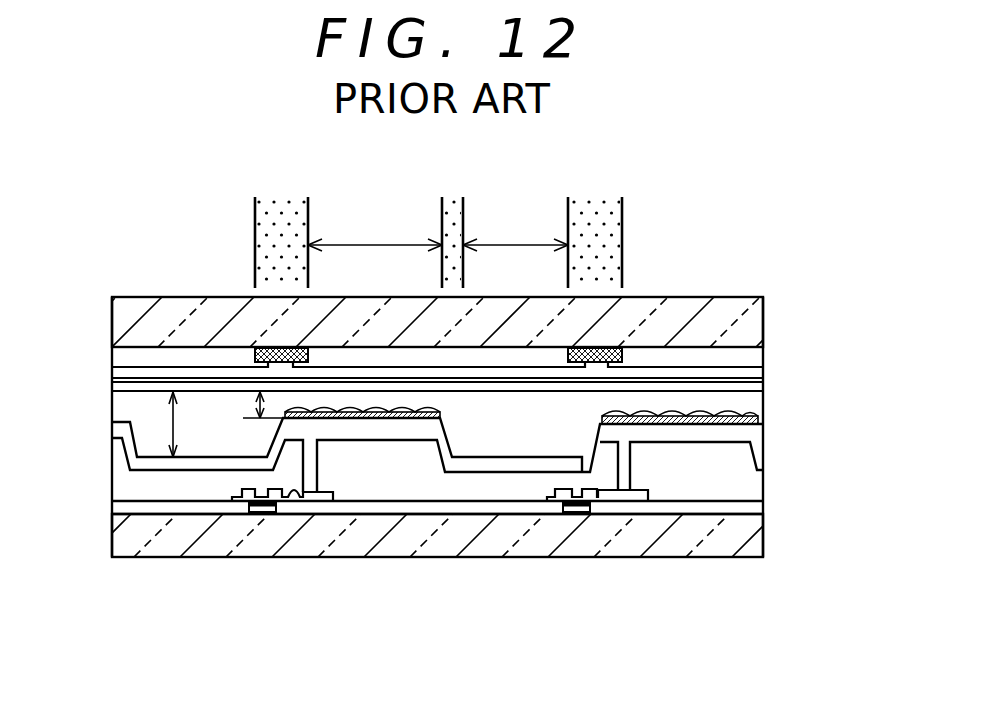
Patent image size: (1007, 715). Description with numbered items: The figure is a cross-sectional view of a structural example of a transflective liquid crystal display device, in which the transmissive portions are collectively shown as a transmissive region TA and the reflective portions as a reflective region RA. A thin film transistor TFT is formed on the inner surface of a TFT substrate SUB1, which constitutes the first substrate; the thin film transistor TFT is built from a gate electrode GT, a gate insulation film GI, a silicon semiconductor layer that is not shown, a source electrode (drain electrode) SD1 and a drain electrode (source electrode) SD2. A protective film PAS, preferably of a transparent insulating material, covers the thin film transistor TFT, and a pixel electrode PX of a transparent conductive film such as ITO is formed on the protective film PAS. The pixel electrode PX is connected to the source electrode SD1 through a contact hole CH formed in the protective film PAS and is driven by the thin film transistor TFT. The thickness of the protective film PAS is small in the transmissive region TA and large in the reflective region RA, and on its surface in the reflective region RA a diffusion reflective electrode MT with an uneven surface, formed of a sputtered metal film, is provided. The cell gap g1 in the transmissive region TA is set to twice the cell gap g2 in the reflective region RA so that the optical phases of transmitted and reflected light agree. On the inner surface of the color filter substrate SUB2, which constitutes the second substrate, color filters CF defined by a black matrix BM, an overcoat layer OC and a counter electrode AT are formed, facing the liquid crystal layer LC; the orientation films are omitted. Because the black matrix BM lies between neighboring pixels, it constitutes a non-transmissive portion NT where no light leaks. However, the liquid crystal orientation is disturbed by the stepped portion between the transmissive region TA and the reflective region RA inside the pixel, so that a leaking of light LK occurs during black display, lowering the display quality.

The color filter substrate SUB2 is at (750, 318).
The color filter CF is at (752, 357).
The black matrix BM is at (610, 347).
The overcoat layer OC is at (752, 375).
The counter electrode AT is at (117, 383).
The liquid crystal layer LC is at (750, 402).
The protective film PAS is at (745, 485).
The diffusion reflective electrode MT is at (440, 418).
The contact hole CH is at (313, 457).
The pixel electrode PX is at (525, 465).
The source electrode (drain electrode) SD1 is at (300, 497).
The drain electrode (source electrode) SD2 is at (238, 491).
The gate electrode GT is at (262, 512).
The gate insulation film GI is at (752, 508).
The TFT substrate SUB1 is at (753, 540).
The thin film transistor TFT is at (642, 567).
The non-transmissive portion NT is at (438, 221).
The leaking of light LK is at (458, 218).
The reflective region RA is at (375, 227).
The transmissive region TA is at (515, 227).
The cell gap in the transmissive region g1 is at (158, 424).
The cell gap in the reflective region g2 is at (257, 402).